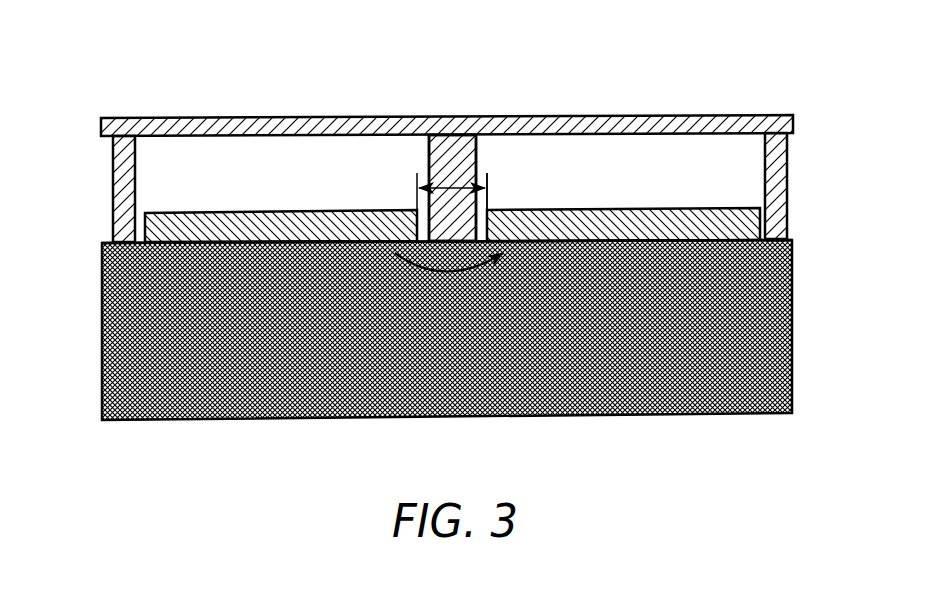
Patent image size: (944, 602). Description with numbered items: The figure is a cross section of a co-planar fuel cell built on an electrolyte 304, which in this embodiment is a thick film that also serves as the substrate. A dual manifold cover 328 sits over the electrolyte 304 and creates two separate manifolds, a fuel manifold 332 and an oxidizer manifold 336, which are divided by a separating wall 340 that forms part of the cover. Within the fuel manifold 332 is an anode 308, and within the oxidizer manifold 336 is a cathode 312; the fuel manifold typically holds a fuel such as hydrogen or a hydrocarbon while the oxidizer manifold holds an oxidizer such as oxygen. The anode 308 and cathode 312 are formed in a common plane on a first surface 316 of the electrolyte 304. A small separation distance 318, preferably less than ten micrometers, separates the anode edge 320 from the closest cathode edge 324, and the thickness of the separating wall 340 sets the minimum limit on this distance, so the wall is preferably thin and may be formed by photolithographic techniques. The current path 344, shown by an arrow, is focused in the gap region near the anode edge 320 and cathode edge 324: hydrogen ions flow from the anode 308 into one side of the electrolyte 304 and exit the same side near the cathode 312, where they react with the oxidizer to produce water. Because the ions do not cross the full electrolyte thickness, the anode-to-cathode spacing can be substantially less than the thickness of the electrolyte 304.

The electrolyte 304 is at (102, 327).
The anode 308 is at (313, 222).
The cathode 312 is at (623, 225).
The first surface 316 is at (789, 237).
The separation distance 318 is at (455, 196).
The anode edge 320 is at (414, 208).
The cathode edge 324 is at (490, 210).
The dual manifold cover 328 is at (315, 118).
The fuel manifold 332 is at (197, 162).
The oxidizer manifold 336 is at (722, 153).
The separating wall 340 is at (452, 150).
The current path 344 is at (445, 272).